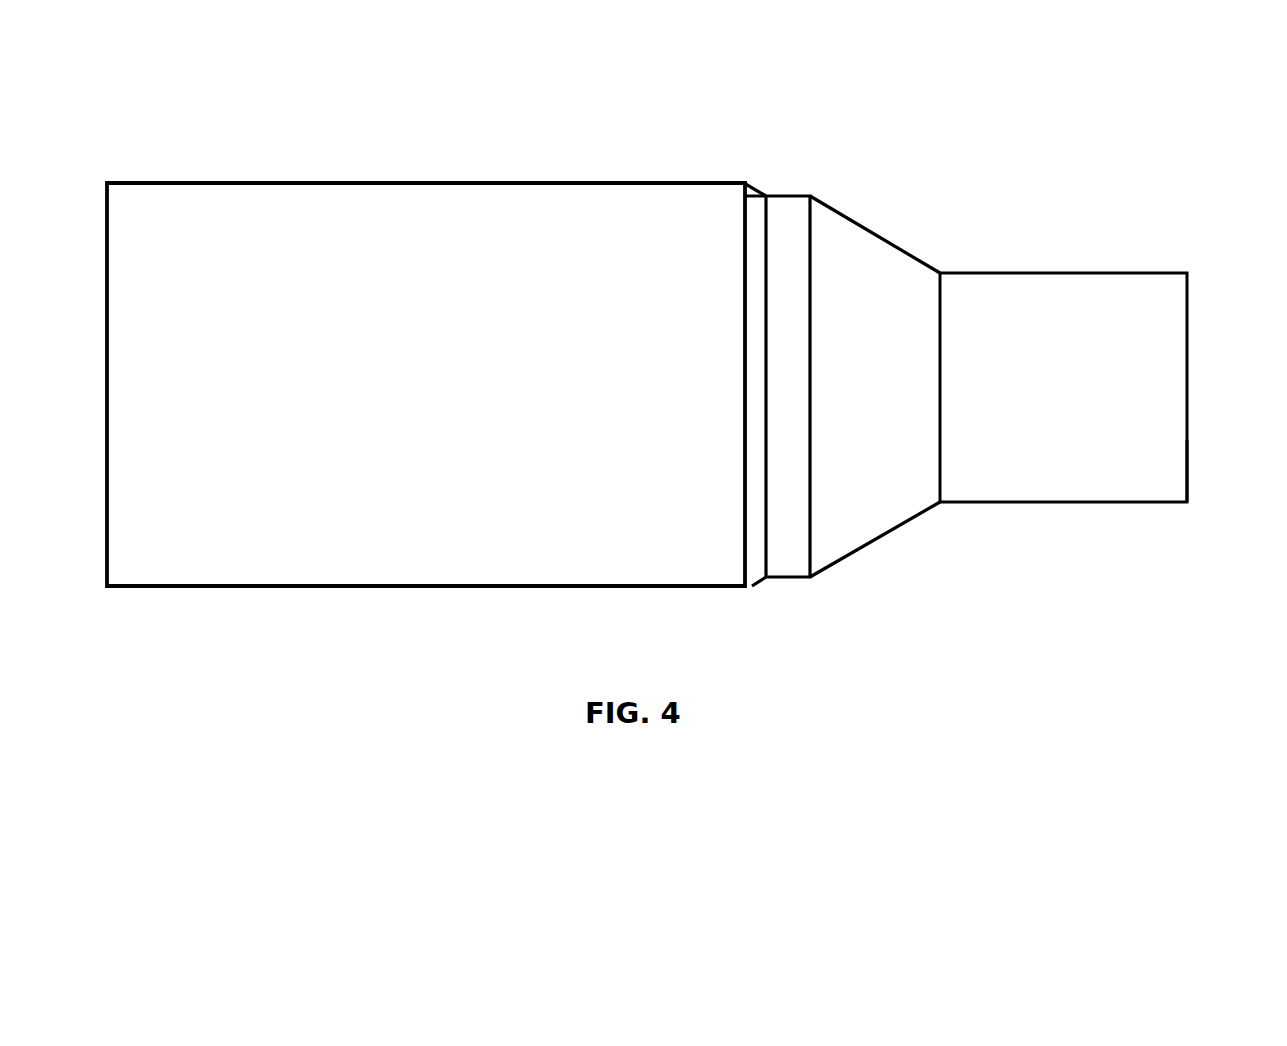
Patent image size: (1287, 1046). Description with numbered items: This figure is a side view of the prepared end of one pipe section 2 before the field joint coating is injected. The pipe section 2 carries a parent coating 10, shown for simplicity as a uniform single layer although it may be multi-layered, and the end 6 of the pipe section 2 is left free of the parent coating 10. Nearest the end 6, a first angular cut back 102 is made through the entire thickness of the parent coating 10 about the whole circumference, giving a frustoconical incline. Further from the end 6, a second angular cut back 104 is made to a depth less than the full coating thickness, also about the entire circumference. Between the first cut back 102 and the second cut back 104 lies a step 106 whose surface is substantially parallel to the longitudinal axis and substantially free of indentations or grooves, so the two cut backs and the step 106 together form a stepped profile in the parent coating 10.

The parent coating 10 is at (310, 263).
The second angular cut back 104 is at (755, 193).
The step 106 is at (790, 195).
The first angular cut back 102 is at (904, 246).
The pipe section 2 is at (1087, 317).
The end 6 is at (1190, 480).